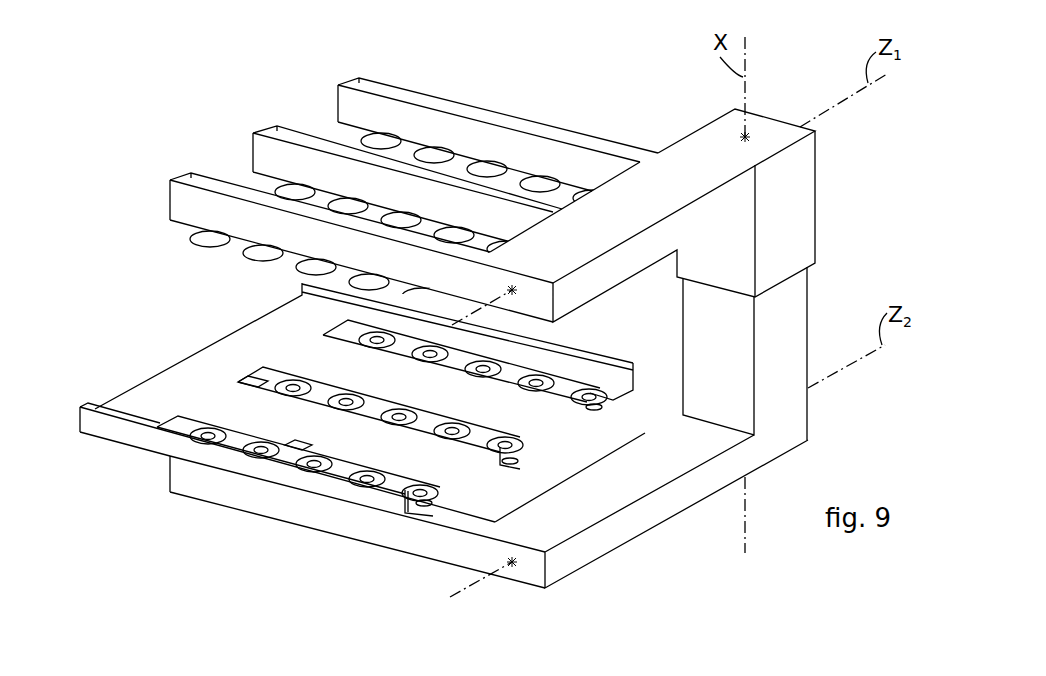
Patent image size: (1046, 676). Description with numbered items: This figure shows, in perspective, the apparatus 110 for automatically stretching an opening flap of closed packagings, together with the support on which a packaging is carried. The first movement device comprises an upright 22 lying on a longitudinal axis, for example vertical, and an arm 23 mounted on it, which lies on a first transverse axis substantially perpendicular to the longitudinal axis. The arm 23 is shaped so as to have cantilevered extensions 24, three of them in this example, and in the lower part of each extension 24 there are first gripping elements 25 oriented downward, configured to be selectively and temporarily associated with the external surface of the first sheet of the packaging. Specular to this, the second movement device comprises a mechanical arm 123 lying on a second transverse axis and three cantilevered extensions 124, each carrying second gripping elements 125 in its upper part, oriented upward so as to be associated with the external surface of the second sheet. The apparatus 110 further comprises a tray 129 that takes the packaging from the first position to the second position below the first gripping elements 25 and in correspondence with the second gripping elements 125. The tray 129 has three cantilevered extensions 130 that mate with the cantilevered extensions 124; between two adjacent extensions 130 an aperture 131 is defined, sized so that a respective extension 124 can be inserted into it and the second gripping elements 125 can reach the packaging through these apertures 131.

The upright 22 is at (793, 307).
The arm 23 is at (640, 253).
The extensions 24 is at (358, 80).
The first gripping elements 25 is at (262, 252).
The apparatus 110 is at (877, 192).
The mechanical arm 123 is at (582, 557).
The cantilevered extensions 124 is at (257, 498).
The second gripping elements 125 is at (262, 444).
The tray 129 is at (138, 403).
The cantilevered extensions 130 is at (427, 467).
The aperture 131 is at (250, 370).